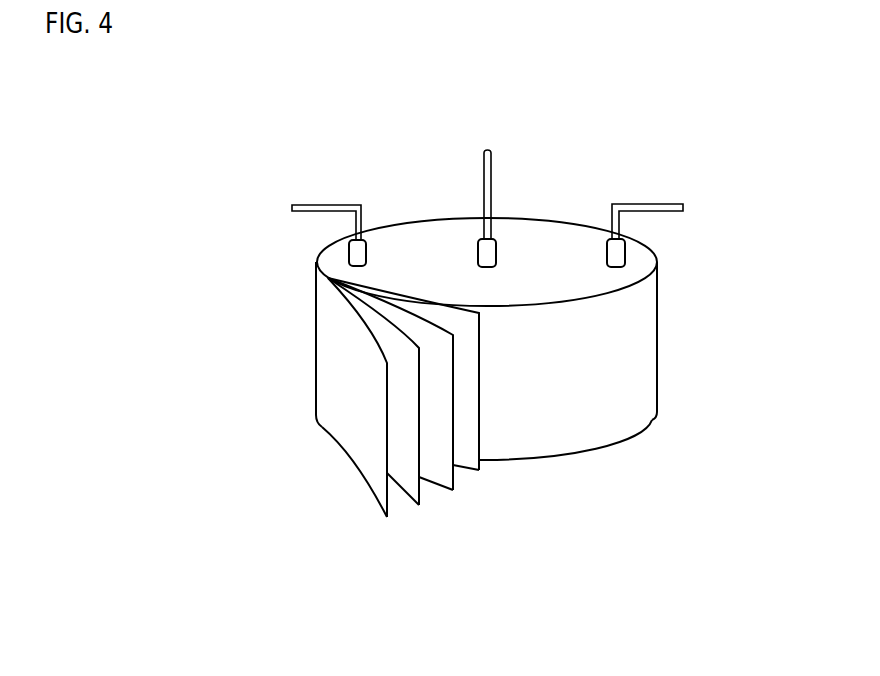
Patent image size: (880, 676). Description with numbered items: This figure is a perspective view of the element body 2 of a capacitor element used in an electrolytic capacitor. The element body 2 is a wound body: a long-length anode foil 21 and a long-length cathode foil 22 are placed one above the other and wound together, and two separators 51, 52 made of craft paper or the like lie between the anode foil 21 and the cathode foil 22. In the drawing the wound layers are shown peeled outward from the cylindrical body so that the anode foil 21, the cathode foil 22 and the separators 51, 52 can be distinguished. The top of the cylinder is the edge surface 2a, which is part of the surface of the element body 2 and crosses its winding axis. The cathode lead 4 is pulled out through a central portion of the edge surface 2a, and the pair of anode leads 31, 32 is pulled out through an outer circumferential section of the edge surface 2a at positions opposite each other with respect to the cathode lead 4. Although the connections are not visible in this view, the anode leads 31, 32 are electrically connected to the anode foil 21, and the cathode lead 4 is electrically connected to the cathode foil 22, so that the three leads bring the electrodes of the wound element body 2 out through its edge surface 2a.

The element body 2 is at (648, 355).
The edge surface 2a is at (573, 282).
The anode foil 21 is at (468, 458).
The cathode foil 22 is at (405, 478).
The separator 51 is at (440, 470).
The separator 52 is at (372, 470).
The anode lead 31 is at (325, 206).
The anode lead 32 is at (652, 206).
The cathode lead 4 is at (487, 185).